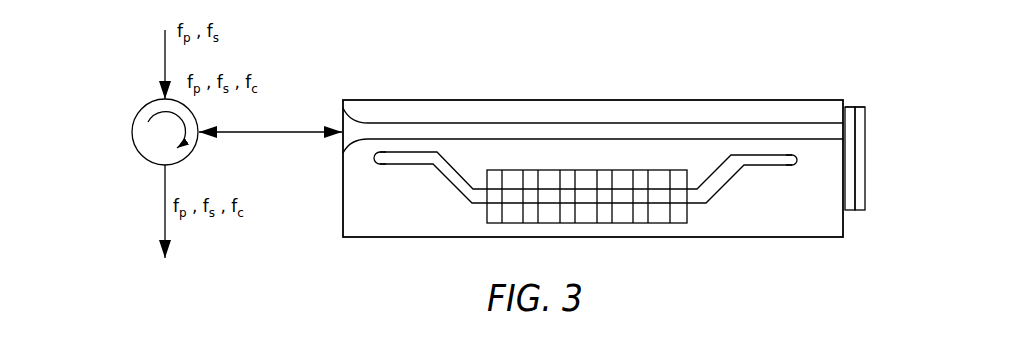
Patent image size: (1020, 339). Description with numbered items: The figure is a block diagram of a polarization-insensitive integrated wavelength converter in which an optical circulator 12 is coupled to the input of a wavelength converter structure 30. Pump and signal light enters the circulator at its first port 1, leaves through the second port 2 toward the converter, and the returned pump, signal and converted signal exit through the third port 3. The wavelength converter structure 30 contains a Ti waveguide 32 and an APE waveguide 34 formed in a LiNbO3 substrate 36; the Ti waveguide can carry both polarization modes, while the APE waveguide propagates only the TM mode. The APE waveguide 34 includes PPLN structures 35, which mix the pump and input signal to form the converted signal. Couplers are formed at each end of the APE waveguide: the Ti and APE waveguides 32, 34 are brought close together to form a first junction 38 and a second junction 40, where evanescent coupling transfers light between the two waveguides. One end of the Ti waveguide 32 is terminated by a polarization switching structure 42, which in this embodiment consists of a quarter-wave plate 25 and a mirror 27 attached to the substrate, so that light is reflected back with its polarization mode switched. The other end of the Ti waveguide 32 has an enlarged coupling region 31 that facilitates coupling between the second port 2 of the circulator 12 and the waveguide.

The optical circulator 12 is at (137, 113).
The first port 1 is at (154, 67).
The second port 2 is at (270, 118).
The third port 3 is at (172, 211).
The wavelength converter structure 30 is at (747, 61).
The enlarged coupling region 31 is at (352, 127).
The Ti waveguide 32 is at (453, 127).
The APE waveguide 34 is at (457, 178).
The PPLN structures 35 is at (496, 176).
The LiNbO3 substrate 36 is at (828, 210).
The first junction 38 is at (410, 153).
The second junction 40 is at (768, 147).
The polarization switching structure 42 is at (854, 91).
The mirror 27 is at (855, 108).
The quarter-wave plate 25 is at (847, 213).